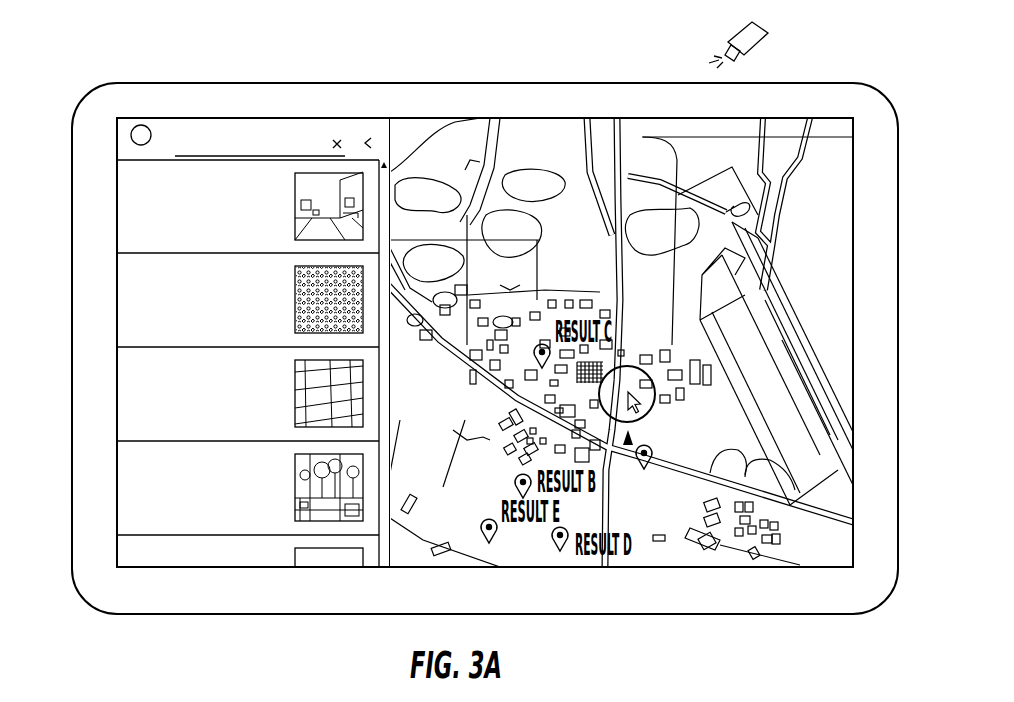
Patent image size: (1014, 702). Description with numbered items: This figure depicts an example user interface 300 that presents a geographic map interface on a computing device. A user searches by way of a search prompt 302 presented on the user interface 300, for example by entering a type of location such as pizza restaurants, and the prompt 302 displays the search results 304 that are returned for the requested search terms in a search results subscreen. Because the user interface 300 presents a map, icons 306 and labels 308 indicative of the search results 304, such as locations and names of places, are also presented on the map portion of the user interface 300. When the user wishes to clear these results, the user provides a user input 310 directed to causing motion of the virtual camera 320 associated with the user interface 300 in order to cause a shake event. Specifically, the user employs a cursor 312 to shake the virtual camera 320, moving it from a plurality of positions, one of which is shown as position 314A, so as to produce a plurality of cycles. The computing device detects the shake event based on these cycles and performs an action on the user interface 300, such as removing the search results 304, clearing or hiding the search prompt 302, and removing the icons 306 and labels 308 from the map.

The user interface 300 is at (137, 50).
The search prompt 302 is at (117, 218).
The search results 304 is at (138, 317).
The icon 306 is at (646, 468).
The label 308 is at (722, 428).
The user input 310 is at (655, 398).
The cursor 312 is at (636, 390).
The position 314A is at (628, 445).
The virtual camera 320 is at (768, 36).